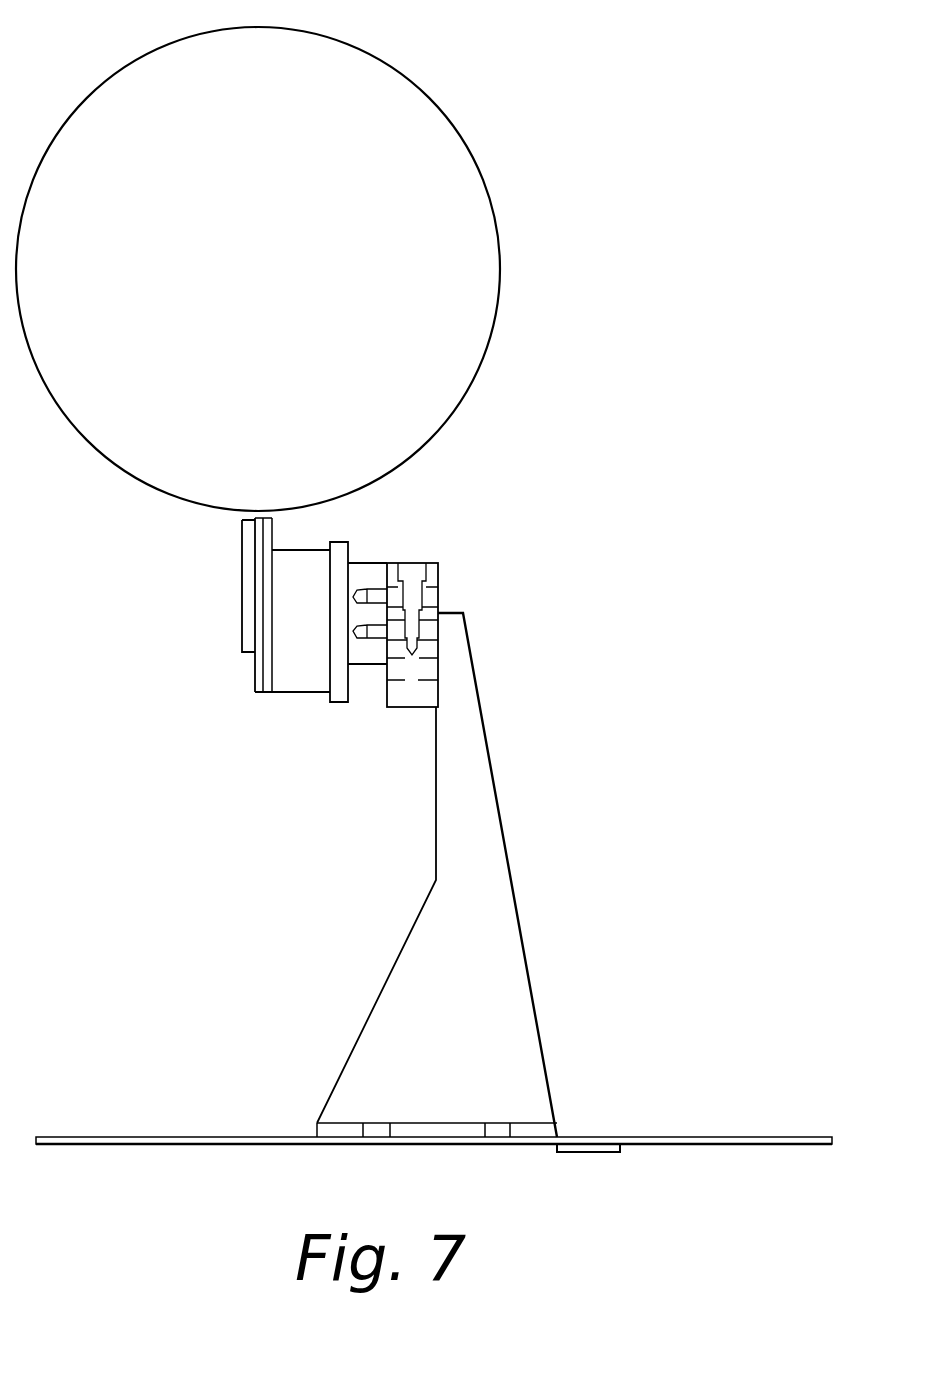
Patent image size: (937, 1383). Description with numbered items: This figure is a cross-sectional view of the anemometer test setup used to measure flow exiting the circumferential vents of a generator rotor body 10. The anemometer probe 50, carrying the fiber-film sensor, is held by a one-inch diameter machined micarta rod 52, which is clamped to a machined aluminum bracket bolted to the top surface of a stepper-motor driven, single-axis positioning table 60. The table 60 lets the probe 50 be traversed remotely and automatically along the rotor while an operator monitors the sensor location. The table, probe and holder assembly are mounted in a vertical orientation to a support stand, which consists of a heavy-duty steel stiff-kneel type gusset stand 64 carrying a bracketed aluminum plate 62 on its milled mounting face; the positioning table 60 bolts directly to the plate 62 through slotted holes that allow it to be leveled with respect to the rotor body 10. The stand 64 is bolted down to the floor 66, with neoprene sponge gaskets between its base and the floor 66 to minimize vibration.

The rotor body 10 is at (268, 287).
The anemometer probe 50 is at (240, 520).
The micarta rod 52 is at (240, 580).
The positioning table 60 is at (293, 693).
The bracketed aluminum plate 62 is at (372, 563).
The support stand 64 is at (517, 900).
The floor 66 is at (150, 1136).